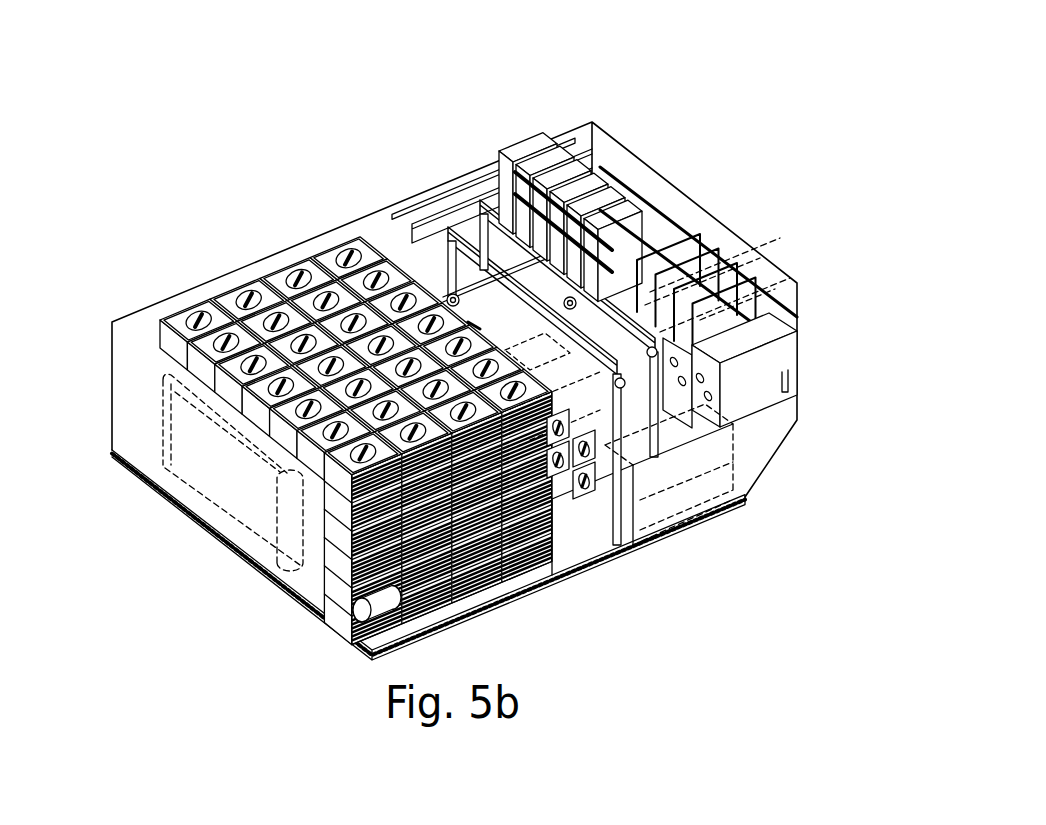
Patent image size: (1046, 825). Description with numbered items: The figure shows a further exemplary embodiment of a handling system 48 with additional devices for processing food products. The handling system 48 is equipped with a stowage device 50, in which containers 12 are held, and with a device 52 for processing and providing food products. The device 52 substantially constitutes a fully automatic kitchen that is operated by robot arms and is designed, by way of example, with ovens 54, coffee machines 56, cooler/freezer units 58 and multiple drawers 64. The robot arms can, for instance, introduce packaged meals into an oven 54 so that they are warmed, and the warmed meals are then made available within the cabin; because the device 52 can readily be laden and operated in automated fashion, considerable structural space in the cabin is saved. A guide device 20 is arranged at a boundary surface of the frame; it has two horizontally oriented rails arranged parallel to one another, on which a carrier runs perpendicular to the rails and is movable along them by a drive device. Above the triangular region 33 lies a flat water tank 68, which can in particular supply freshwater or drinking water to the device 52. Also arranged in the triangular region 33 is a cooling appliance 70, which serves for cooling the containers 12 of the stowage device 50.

The containers 12 is at (178, 321).
The guide device 20 is at (478, 182).
The triangular region 33 is at (138, 492).
The handling system 48 is at (402, 132).
The stowage device 50 is at (342, 414).
The device for processing and providing food products 52 is at (505, 143).
The oven 54 is at (772, 350).
The coffee machine 56 is at (545, 153).
The cooler/freezer unit 58 is at (598, 168).
The drawers 64 is at (727, 442).
The flat water tank 68 is at (217, 487).
The cooling appliance 70 is at (365, 612).